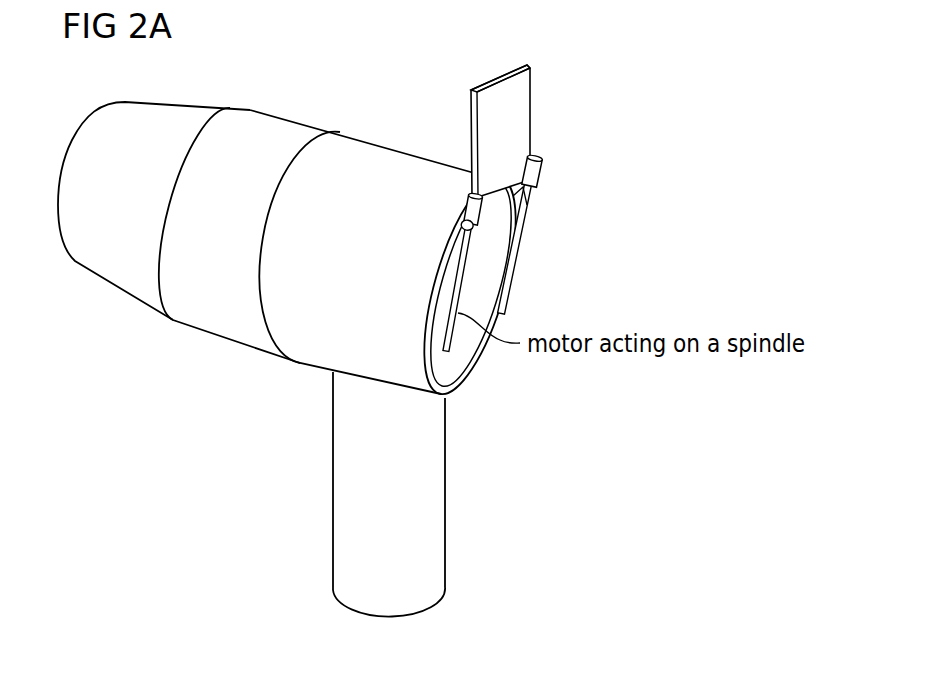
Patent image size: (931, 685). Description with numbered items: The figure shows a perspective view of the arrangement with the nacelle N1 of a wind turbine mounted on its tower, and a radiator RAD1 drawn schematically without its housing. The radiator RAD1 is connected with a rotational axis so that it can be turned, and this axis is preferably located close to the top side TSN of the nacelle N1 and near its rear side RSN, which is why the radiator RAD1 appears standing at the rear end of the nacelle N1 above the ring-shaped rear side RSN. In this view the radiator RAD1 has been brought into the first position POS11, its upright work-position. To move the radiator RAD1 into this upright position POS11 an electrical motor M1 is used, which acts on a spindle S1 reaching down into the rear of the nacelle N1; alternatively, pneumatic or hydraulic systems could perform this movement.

The nacelle N1 is at (292, 128).
The top side of the nacelle TSN is at (398, 136).
The rear side of the nacelle RSN is at (465, 363).
The radiator RAD1 is at (522, 117).
The first position POS11 is at (500, 75).
The electrical motor M1 is at (542, 173).
The spindle S1 is at (522, 223).